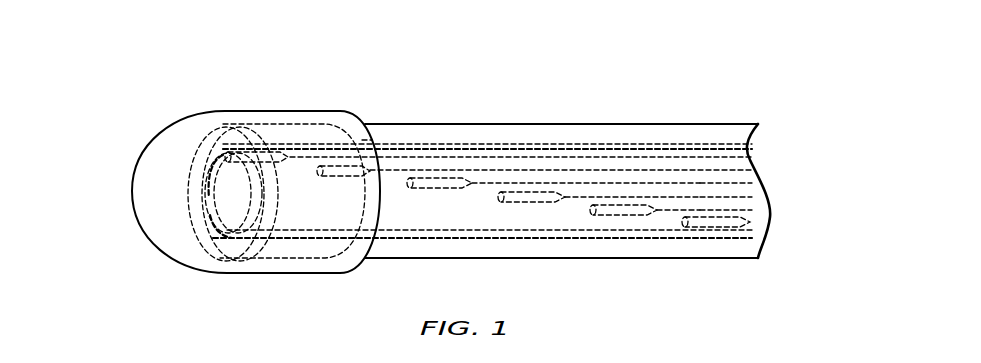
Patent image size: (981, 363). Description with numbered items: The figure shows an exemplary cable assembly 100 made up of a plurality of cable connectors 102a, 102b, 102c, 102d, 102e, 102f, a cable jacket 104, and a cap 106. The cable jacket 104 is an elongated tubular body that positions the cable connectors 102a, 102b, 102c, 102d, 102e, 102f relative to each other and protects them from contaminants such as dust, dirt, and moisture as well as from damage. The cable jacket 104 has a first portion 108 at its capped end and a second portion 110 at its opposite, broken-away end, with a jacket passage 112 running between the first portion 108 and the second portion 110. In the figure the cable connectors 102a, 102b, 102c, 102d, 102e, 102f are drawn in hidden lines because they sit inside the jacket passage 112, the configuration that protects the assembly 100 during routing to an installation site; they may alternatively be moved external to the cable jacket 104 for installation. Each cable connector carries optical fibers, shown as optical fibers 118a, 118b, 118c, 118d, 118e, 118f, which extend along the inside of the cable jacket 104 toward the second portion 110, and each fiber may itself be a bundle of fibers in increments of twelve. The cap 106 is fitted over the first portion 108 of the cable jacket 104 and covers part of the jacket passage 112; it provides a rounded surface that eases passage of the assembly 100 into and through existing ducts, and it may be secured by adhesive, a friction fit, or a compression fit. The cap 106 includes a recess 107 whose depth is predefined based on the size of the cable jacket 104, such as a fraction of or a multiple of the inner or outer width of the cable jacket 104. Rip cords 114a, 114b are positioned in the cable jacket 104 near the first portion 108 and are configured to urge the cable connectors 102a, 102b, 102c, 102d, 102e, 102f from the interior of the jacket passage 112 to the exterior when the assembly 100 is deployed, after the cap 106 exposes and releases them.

The assembly 100 is at (629, 52).
The cable connector 102a is at (273, 143).
The cable connector 102b is at (362, 140).
The cable connector 102c is at (446, 172).
The cable connector 102d is at (530, 184).
The cable connector 102e is at (622, 196).
The cable connector 102f is at (709, 208).
The cable jacket 104 is at (389, 264).
The cap 106 is at (138, 152).
The recess 107 is at (357, 152).
The first portion 108 is at (193, 223).
The second portion 110 is at (763, 250).
The jacket passage 112 is at (257, 217).
The rip cord 114a is at (205, 150).
The rip cord 114b is at (222, 240).
The optical fiber 118a is at (752, 136).
The optical fiber 118b is at (752, 157).
The optical fiber 118c is at (752, 174).
The optical fiber 118d is at (762, 194).
The optical fiber 118e is at (770, 213).
The optical fiber 118f is at (768, 242).